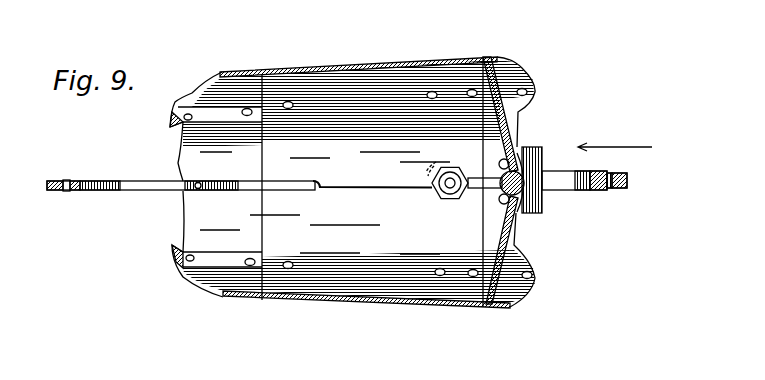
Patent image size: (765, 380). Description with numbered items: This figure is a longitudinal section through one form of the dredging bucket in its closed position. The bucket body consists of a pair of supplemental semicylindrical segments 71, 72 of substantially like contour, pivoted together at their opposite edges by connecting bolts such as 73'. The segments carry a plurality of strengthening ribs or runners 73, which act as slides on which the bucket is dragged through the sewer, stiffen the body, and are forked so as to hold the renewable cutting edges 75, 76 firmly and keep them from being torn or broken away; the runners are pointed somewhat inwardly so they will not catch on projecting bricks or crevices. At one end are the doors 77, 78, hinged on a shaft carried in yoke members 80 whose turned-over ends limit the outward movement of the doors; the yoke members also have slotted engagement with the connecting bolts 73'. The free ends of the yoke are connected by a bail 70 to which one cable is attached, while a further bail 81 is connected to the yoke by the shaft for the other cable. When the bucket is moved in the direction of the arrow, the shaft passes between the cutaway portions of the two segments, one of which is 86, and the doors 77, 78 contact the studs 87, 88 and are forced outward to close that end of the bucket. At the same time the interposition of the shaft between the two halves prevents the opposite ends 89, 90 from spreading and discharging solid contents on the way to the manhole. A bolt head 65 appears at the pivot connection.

The bolt 65 is at (477, 172).
The bail 70 is at (116, 191).
The semicylindrical segment 71 is at (388, 62).
The semicylindrical segment 72 is at (360, 303).
The strengthening ribs or runners 73 is at (198, 203).
The connecting bolt 73' is at (429, 199).
The cutting edge 75 is at (228, 65).
The cutting edge 76 is at (492, 57).
The door 77 is at (513, 120).
The door 78 is at (513, 248).
The yoke member 80 is at (542, 203).
The bail 81 is at (577, 190).
The cutaway portion 86 is at (481, 190).
The stud 87 is at (522, 152).
The stud 88 is at (518, 212).
The opposite end of bucket 89 is at (178, 163).
The opposite end of bucket 90 is at (183, 212).